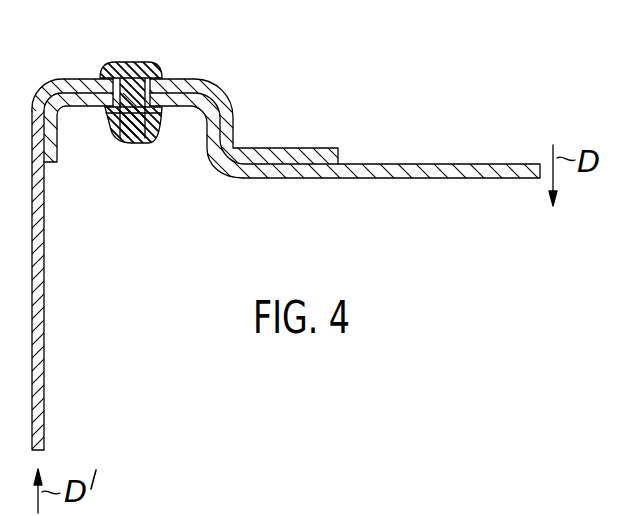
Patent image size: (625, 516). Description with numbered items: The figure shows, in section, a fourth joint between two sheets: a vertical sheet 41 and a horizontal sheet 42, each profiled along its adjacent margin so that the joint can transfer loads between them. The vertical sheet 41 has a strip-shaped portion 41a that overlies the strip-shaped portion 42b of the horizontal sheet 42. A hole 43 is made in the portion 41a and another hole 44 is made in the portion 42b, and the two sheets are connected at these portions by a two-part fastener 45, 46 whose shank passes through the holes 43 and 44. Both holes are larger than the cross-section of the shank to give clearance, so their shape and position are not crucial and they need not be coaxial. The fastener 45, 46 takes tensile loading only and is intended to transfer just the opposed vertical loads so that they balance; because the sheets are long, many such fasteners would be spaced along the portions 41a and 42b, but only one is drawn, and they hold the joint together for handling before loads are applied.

The vertical sheet 41 is at (45, 295).
The portion of the sheet 41 41a is at (72, 78).
The horizontal sheet 42 is at (425, 163).
The portion of the sheet 42 42b is at (180, 108).
The hole 43 is at (170, 78).
The hole 44 is at (113, 112).
The two-part fastener 45 is at (123, 62).
The two-part fastener 46 is at (117, 141).